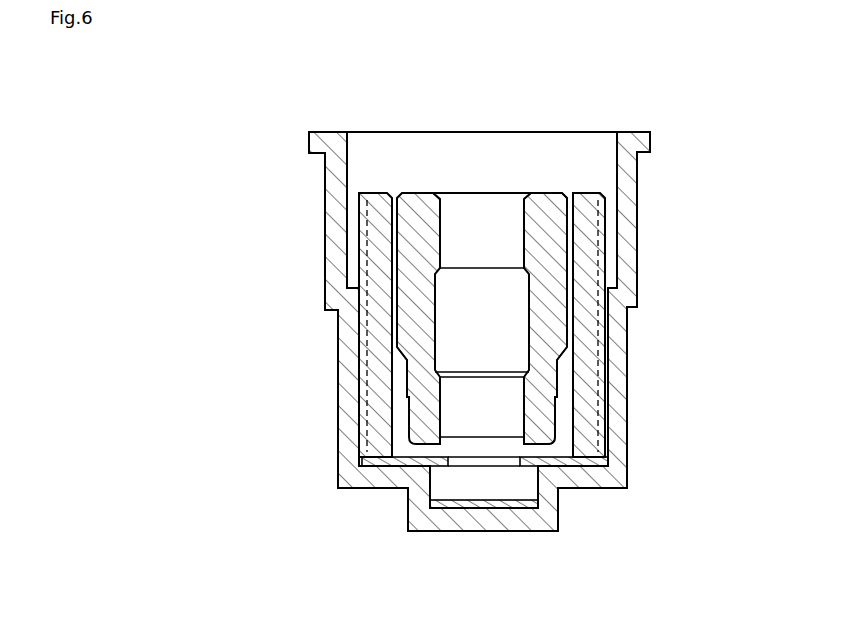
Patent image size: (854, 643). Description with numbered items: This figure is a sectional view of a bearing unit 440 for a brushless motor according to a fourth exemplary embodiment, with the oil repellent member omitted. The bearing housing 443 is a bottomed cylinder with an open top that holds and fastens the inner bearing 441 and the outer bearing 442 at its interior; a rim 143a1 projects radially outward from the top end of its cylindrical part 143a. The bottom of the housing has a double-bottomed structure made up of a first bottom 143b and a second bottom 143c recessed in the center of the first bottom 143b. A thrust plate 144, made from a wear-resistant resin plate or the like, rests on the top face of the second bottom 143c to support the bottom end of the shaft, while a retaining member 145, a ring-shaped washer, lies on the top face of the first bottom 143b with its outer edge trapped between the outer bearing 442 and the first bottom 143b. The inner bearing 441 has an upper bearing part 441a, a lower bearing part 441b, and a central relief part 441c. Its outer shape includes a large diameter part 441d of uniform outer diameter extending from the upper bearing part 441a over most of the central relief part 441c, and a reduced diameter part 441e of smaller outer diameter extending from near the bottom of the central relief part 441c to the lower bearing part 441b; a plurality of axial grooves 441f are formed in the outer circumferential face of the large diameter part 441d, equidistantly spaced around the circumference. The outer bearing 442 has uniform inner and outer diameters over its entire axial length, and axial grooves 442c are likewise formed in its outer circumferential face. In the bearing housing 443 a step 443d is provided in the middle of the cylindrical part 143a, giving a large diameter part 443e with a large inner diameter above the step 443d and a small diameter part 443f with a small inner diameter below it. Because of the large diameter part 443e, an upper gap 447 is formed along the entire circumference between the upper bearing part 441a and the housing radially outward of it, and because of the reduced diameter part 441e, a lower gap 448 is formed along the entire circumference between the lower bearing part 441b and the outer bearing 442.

The bearing unit 440 is at (617, 98).
The cylindrical part 143a is at (643, 213).
The rim 143a1 is at (652, 140).
The first bottom 143b is at (604, 490).
The second bottom 143c is at (523, 521).
The thrust plate 144 is at (424, 504).
The retaining member 145 is at (356, 458).
The inner bearing 441 is at (537, 186).
The upper bearing part 441a is at (482, 217).
The lower bearing part 441b is at (482, 422).
The central relief part 441c is at (505, 330).
The large diameter part 441d is at (552, 257).
The reduced diameter part 441e is at (537, 400).
The grooves 441f is at (590, 290).
The outer bearing 442 is at (586, 186).
The grooves 442c is at (357, 268).
The bearing housing 443 is at (316, 194).
The step 443d is at (356, 290).
The large diameter part 443e is at (337, 222).
The small diameter part 443f is at (347, 358).
The upper gap 447 is at (353, 217).
The lower gap 448 is at (400, 410).